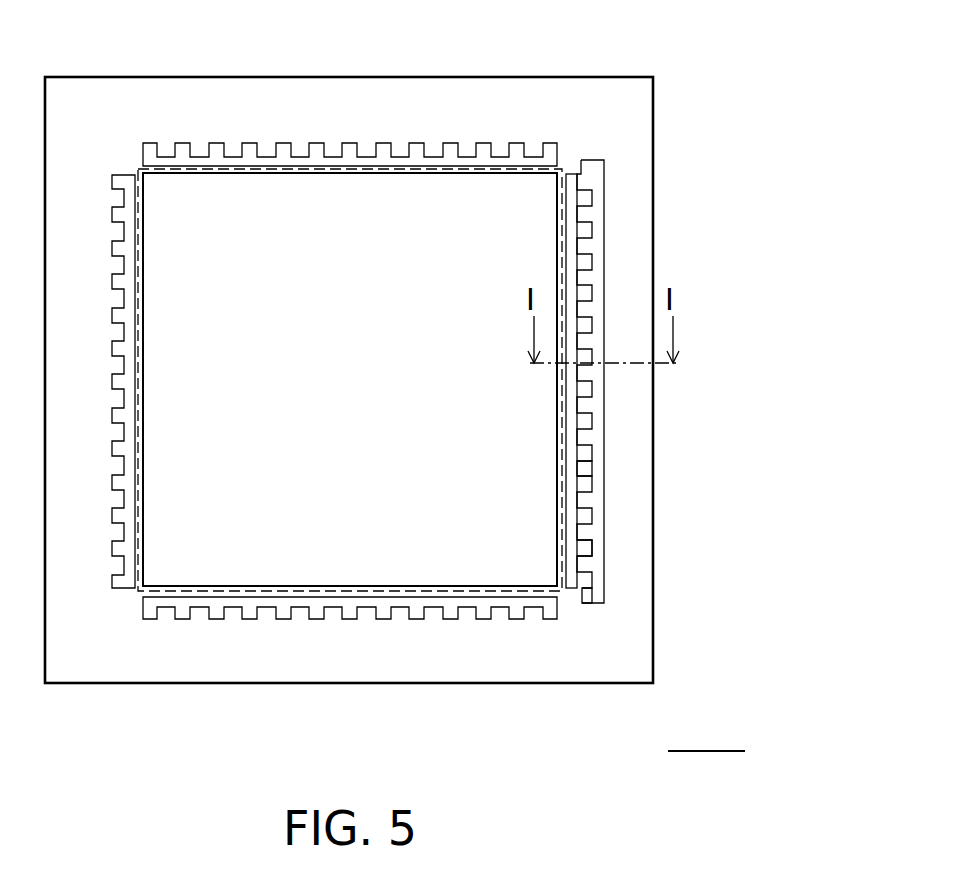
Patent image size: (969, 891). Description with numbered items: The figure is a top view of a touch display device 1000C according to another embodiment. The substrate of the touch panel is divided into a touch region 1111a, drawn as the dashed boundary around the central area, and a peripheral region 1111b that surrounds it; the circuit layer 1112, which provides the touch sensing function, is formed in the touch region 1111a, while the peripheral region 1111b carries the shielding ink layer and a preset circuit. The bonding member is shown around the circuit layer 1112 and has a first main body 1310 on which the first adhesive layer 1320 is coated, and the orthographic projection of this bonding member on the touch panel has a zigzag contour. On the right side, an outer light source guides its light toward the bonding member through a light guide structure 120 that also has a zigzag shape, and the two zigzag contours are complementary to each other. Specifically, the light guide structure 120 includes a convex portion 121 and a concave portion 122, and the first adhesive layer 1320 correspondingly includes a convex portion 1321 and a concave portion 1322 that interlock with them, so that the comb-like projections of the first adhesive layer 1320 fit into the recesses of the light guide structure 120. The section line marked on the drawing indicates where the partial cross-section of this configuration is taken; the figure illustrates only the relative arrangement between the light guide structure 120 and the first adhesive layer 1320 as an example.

The peripheral region 1111b is at (149, 106).
The touch region 1111a is at (270, 168).
The circuit layer 1112 is at (402, 200).
The first main body 1310 is at (490, 107).
The first adhesive layer 1320 is at (568, 172).
The convex portion 1321 is at (582, 545).
The concave portion 1322 is at (582, 463).
The convex portion 121 is at (588, 498).
The concave portion 122 is at (586, 585).
The light guide structure 120 is at (596, 233).
The touch display device 1000C is at (706, 730).